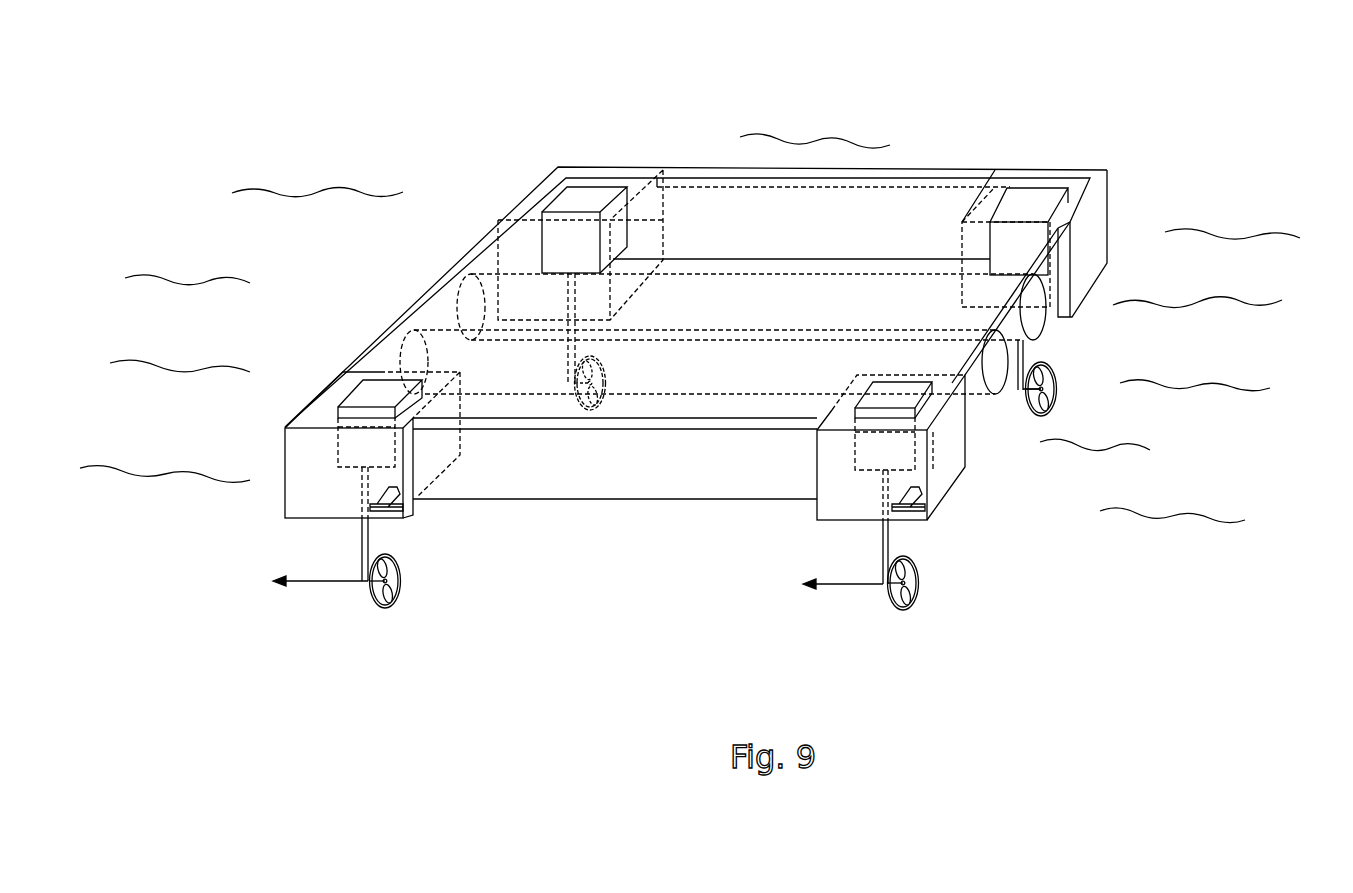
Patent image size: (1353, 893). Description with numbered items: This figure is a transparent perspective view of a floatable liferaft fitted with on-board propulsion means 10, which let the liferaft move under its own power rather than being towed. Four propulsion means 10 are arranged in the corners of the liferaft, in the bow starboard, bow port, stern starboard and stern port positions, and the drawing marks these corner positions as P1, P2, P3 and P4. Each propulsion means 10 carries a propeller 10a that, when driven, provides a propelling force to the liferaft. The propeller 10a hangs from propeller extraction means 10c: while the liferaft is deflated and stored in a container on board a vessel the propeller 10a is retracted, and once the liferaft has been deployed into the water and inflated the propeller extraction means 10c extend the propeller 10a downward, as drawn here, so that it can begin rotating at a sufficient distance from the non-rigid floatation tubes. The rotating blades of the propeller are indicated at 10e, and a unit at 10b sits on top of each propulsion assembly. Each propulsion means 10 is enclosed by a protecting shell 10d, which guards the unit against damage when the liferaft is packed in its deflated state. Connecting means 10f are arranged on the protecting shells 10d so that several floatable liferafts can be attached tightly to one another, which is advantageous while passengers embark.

The propulsion means 10 is at (573, 205).
The propeller 10a is at (398, 597).
The control box 10b is at (370, 394).
The propeller extraction means 10c is at (362, 551).
The protecting shell 10d is at (596, 177).
The propeller 10e is at (377, 600).
The connecting means 10f is at (410, 513).
The first mounting position P1 is at (665, 228).
The second mounting position P2 is at (408, 372).
The third mounting position P3 is at (975, 207).
The fourth mounting position P4 is at (855, 378).